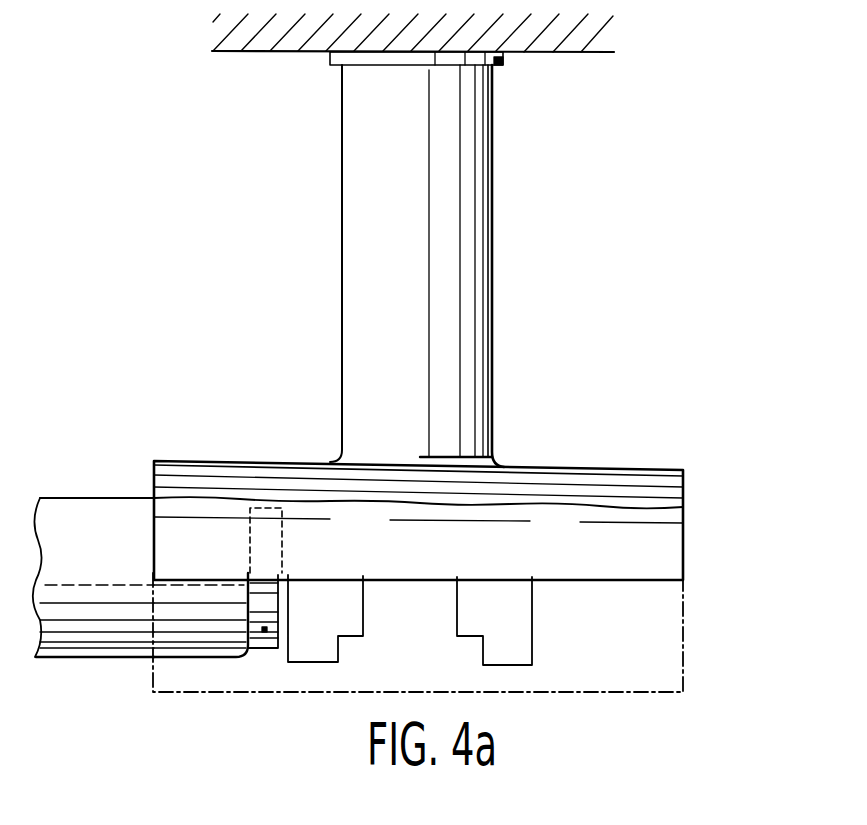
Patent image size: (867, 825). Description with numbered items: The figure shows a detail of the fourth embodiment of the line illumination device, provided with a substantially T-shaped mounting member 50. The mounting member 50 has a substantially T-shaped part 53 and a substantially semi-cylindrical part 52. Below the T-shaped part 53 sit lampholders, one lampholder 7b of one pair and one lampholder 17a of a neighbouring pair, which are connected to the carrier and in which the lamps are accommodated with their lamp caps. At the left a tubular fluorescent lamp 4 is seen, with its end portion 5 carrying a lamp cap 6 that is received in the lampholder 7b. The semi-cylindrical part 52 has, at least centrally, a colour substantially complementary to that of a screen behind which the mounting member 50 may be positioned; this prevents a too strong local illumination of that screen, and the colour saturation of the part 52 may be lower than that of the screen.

The tubular fluorescent lamp 4 is at (93, 637).
The end portion 5 is at (187, 637).
The lamp cap 6 is at (260, 650).
The lampholder 7b is at (318, 637).
The lampholder 17a is at (513, 653).
The mounting member 50 is at (496, 252).
The semi-cylindrical part 52 is at (650, 663).
The T-shaped part 53 is at (652, 534).